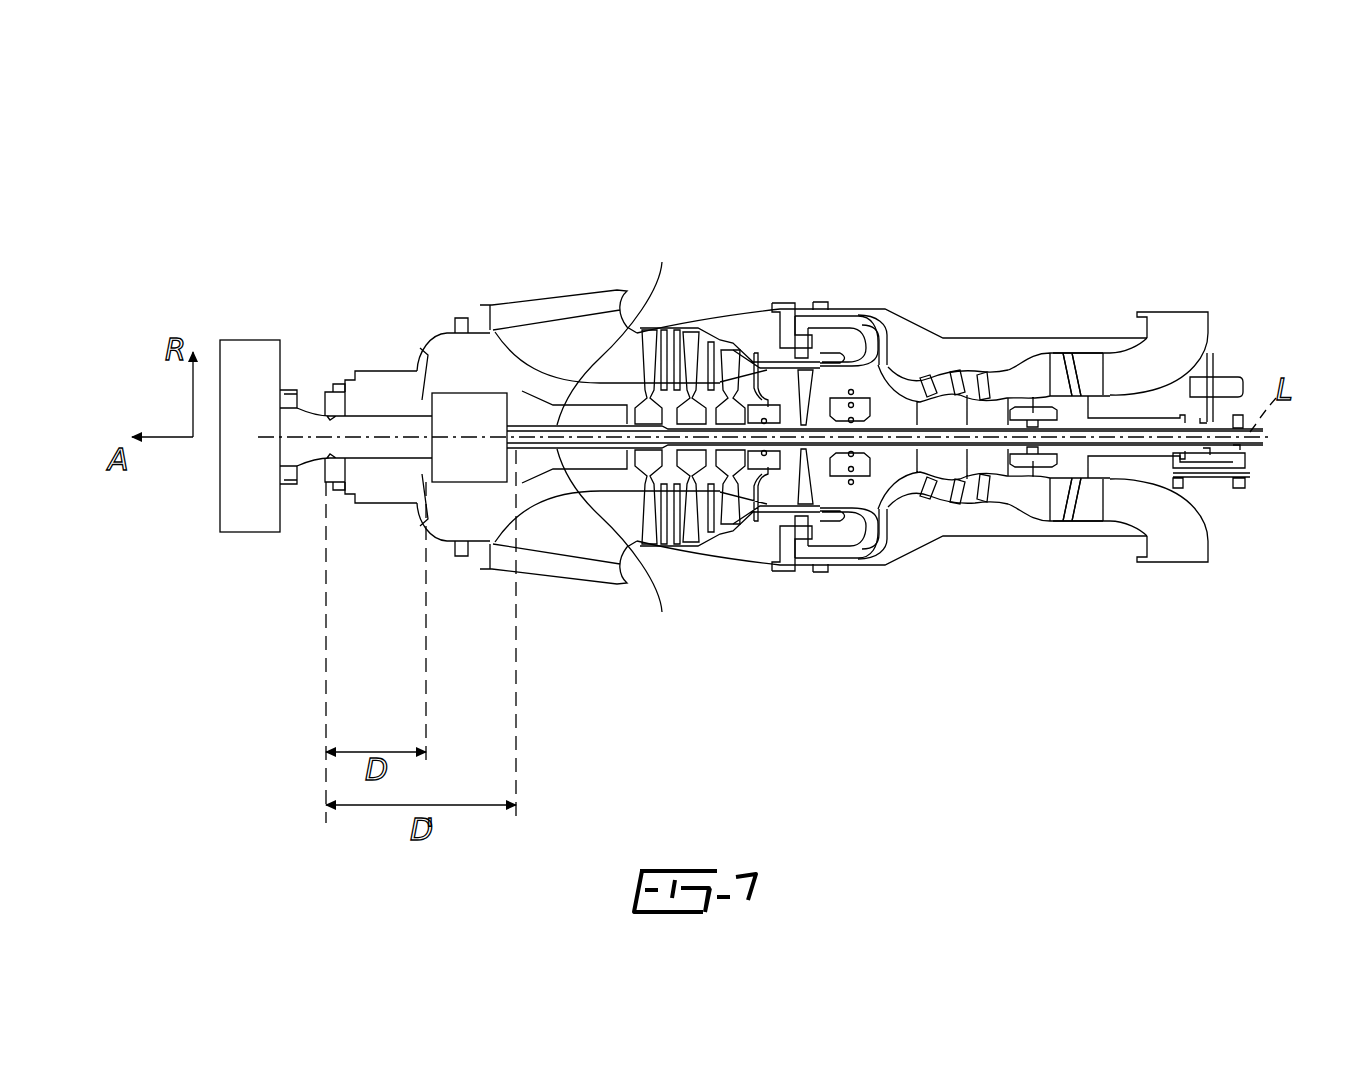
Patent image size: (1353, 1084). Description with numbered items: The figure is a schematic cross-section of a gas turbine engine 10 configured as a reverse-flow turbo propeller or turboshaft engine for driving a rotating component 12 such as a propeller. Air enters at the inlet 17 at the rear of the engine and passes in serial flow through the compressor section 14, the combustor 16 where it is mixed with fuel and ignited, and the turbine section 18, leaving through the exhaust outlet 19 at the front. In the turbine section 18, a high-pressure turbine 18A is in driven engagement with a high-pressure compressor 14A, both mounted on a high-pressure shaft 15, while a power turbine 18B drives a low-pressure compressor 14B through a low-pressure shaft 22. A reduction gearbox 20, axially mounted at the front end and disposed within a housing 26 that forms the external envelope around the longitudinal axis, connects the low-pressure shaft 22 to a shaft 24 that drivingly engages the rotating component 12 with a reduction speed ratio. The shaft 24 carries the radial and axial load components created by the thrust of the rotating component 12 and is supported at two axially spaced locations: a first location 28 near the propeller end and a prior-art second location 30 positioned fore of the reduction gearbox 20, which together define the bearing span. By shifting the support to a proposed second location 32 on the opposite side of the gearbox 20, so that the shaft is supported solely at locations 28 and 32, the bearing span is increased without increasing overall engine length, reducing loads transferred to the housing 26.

The gas turbine engine 10 is at (1166, 176).
The rotating component 12 is at (247, 512).
The compressor section 14 is at (1014, 350).
The high-pressure compressor 14A is at (910, 490).
The low-pressure compressor 14B is at (1087, 505).
The high-pressure shaft 15 is at (943, 338).
The combustor 16 is at (841, 337).
The inlet 17 is at (1206, 284).
The turbine section 18 is at (730, 318).
The high-pressure turbine 18A is at (803, 373).
The power turbine 18B is at (647, 523).
The exhaust outlet 19 is at (567, 281).
The reduction gearbox 20 is at (458, 483).
The low-pressure shaft 22 is at (662, 262).
The shaft 24 is at (372, 470).
The housing 26 is at (390, 370).
The first support location 28 is at (326, 378).
The second support location 30 is at (438, 374).
The proposed second location 32 is at (515, 390).